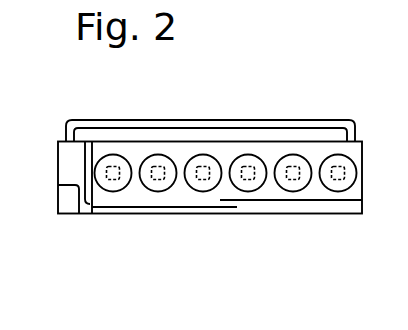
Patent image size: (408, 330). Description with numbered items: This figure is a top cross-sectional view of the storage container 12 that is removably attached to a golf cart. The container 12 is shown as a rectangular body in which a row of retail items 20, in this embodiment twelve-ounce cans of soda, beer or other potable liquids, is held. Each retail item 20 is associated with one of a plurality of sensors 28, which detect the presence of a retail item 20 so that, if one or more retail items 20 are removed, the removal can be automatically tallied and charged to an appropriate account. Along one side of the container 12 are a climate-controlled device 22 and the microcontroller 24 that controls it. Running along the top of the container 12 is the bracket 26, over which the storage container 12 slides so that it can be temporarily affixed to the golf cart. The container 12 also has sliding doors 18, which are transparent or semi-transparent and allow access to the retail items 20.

The storage container 12 is at (128, 256).
The sliding doors 18 is at (250, 203).
The retail items 20 is at (260, 184).
The climate-controlled device 22 is at (72, 162).
The microcontroller 24 is at (70, 204).
The bracket 26 is at (143, 119).
The sensors 28 is at (118, 168).